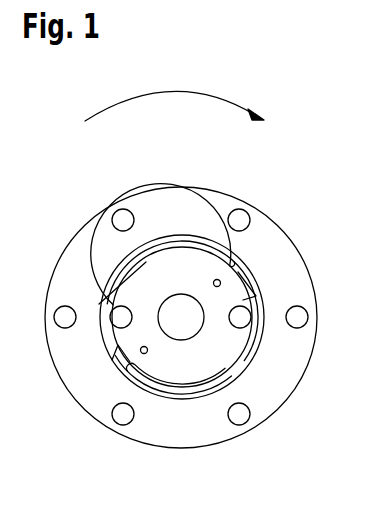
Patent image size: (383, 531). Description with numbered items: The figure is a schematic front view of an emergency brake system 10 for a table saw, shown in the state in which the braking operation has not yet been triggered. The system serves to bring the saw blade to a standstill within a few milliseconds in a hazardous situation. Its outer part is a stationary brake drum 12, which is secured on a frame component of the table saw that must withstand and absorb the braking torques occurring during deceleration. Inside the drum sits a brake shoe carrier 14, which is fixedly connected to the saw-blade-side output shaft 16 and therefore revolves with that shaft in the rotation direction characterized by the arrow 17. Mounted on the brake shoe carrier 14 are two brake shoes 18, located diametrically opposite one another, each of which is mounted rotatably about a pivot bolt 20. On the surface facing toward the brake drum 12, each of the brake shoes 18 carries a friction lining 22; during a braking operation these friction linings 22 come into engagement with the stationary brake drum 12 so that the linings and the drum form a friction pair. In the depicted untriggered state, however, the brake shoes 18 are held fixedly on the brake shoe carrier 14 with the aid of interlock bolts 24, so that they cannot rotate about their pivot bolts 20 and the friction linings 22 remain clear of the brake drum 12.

The emergency brake system 10 is at (296, 165).
The brake drum 12 is at (152, 195).
The brake shoe carrier 14 is at (142, 290).
The output shaft 16 is at (180, 303).
The arrow 17 is at (168, 92).
The brake shoes 18 is at (247, 288).
The pivot bolt 20 is at (240, 317).
The friction lining 22 is at (173, 248).
The interlock bolts 24 is at (217, 287).